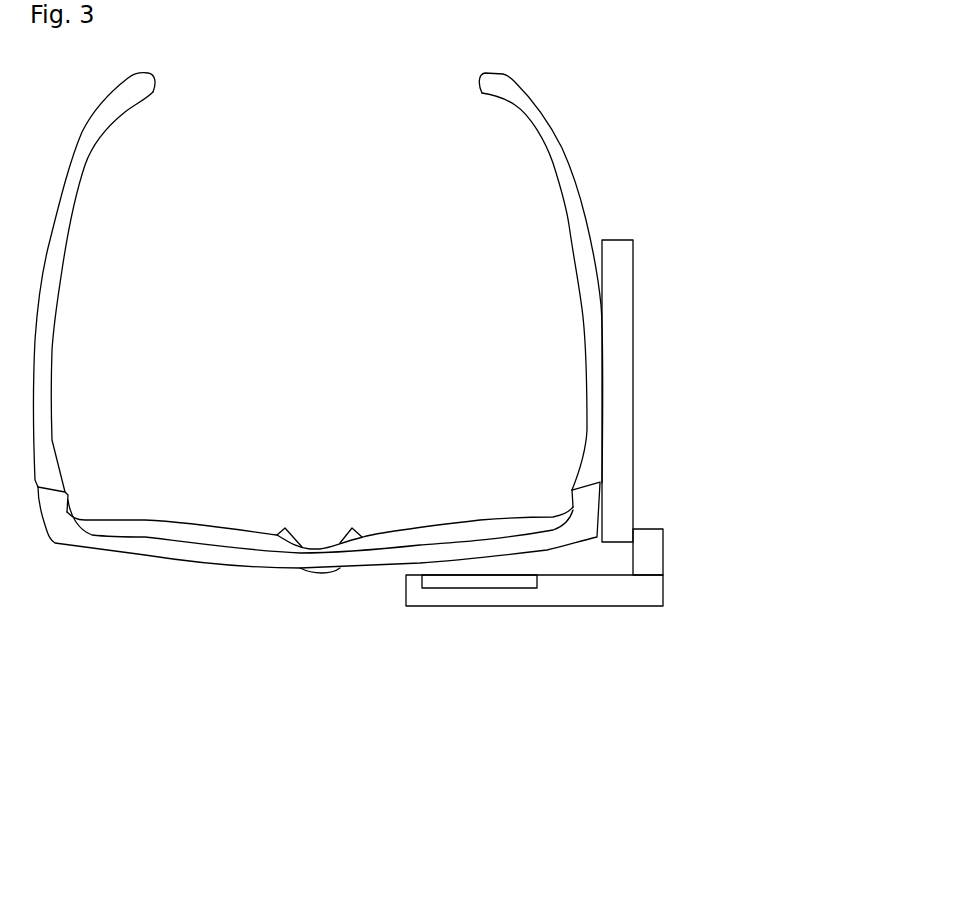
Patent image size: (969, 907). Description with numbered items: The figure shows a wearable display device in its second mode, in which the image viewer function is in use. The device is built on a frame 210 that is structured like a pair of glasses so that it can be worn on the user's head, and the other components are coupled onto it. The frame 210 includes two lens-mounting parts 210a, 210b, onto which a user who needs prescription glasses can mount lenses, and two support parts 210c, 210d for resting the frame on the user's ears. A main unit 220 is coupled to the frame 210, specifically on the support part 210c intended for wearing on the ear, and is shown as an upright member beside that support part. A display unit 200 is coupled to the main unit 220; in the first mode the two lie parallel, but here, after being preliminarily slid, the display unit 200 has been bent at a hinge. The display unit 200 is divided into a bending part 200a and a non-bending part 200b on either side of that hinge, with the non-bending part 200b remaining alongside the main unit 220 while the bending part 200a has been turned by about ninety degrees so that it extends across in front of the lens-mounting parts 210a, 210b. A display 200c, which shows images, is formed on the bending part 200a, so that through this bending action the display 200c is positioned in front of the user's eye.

The display unit 200 is at (663, 630).
The bending part 200a is at (593, 595).
The non-bending part 200b is at (658, 552).
The display 200c is at (487, 582).
The frame 210 is at (598, 203).
The lens-mounting part 210a is at (393, 538).
The lens-mounting part 210b is at (160, 536).
The support part 210c is at (560, 172).
The support part 210d is at (72, 200).
The main unit 220 is at (625, 372).